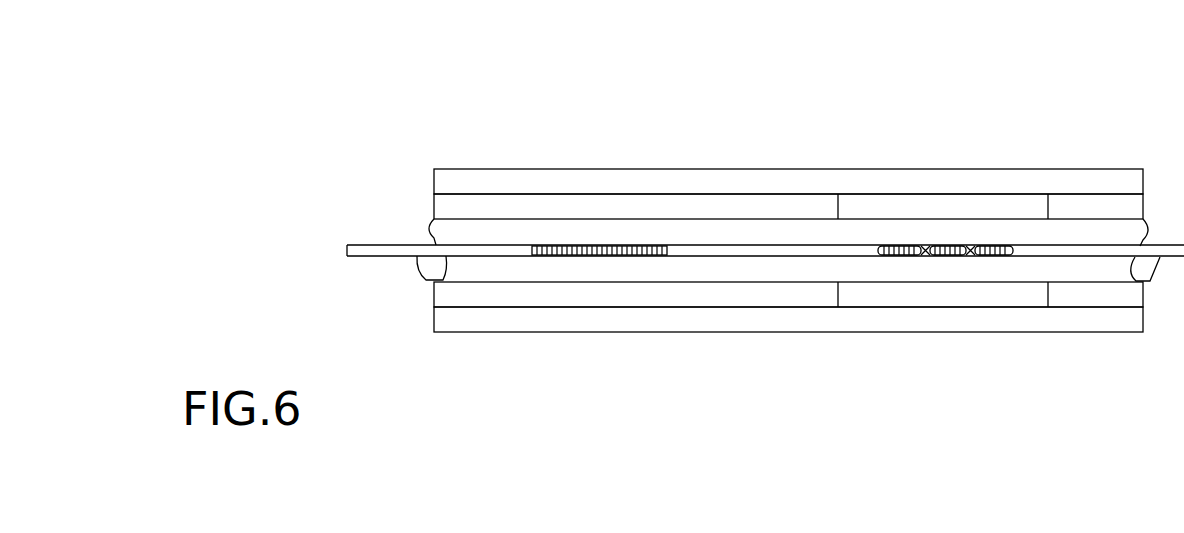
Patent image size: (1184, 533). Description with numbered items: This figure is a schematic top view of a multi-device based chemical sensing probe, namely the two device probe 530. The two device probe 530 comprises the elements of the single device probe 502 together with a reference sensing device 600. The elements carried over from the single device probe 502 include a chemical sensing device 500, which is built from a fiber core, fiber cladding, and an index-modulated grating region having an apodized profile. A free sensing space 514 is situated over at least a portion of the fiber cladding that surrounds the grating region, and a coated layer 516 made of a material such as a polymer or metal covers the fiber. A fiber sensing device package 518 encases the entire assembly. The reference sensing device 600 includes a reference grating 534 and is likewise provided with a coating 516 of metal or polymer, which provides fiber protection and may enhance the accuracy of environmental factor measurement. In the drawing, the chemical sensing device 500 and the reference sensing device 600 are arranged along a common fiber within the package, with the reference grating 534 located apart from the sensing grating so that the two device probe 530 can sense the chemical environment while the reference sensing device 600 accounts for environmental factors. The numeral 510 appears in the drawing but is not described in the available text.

The single device probe 502 is at (930, 297).
The second coil region 510 is at (1000, 255).
The free sensing space 514 is at (867, 212).
The coated layer 516 is at (485, 297).
The fiber sensing device package 518 is at (590, 183).
The two device probe 530 is at (800, 436).
The reference grating 534 is at (548, 252).
The chemical sensing device 500 is at (1013, 400).
The reference sensing device 600 is at (615, 398).